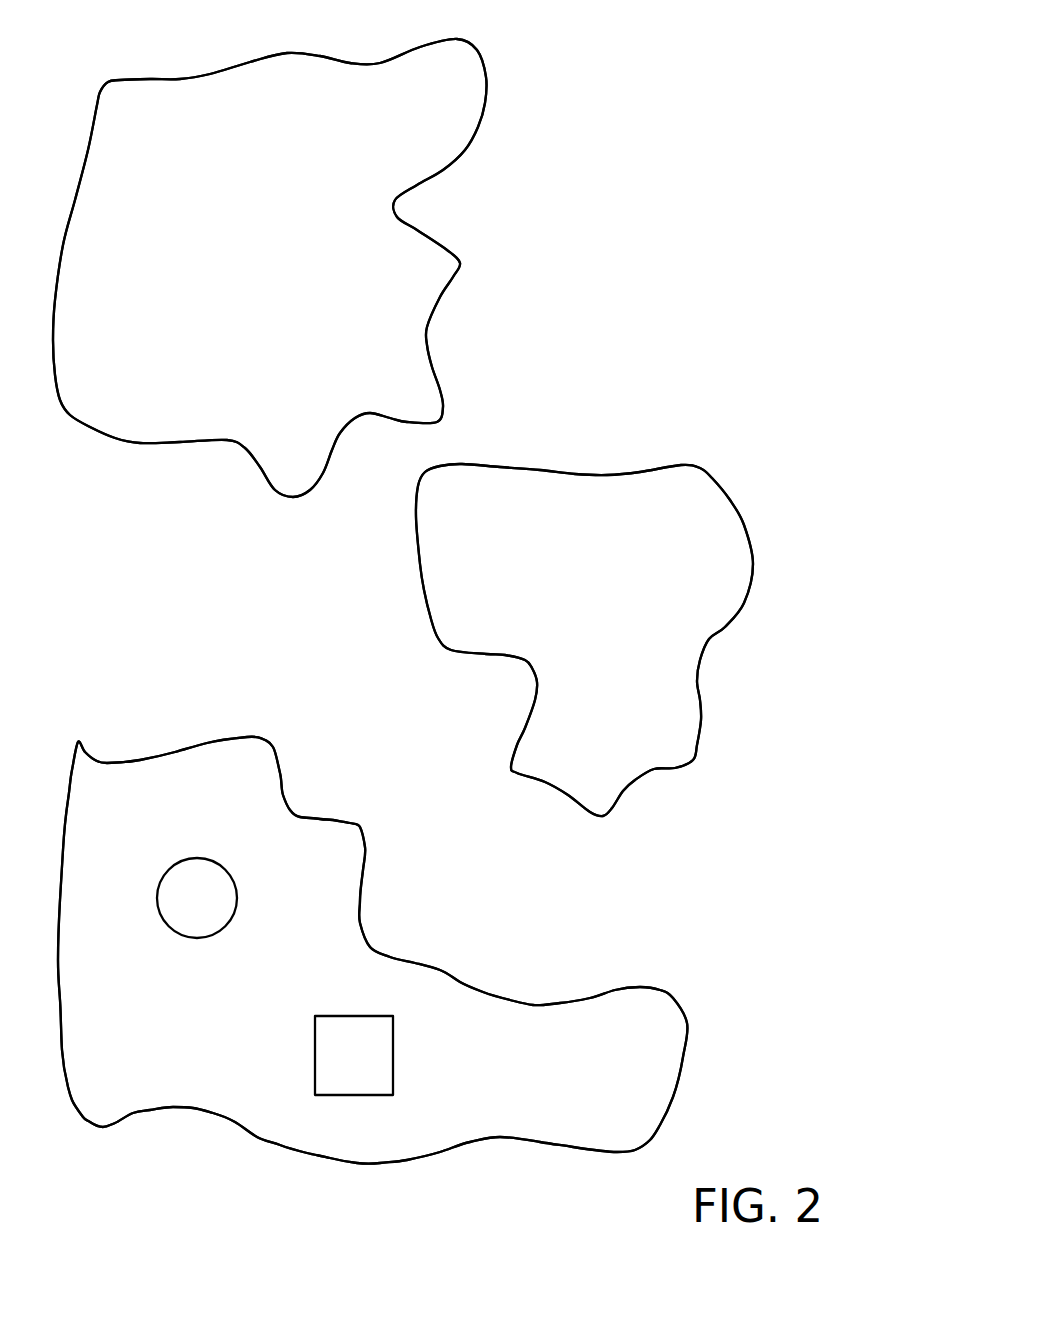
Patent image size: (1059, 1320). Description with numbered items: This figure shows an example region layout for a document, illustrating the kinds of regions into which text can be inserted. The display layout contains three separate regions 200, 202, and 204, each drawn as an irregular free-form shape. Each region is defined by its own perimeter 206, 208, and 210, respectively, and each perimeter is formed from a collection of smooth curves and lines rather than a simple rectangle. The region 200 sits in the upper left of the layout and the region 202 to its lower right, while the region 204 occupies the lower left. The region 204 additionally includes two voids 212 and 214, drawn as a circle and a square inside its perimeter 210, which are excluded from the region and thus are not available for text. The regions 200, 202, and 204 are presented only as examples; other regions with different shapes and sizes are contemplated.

The region 200 is at (395, 307).
The region 202 is at (693, 504).
The region 204 is at (158, 775).
The perimeter 206 is at (495, 93).
The perimeter 208 is at (513, 463).
The perimeter 210 is at (278, 753).
The void 212 is at (218, 890).
The void 214 is at (375, 1028).